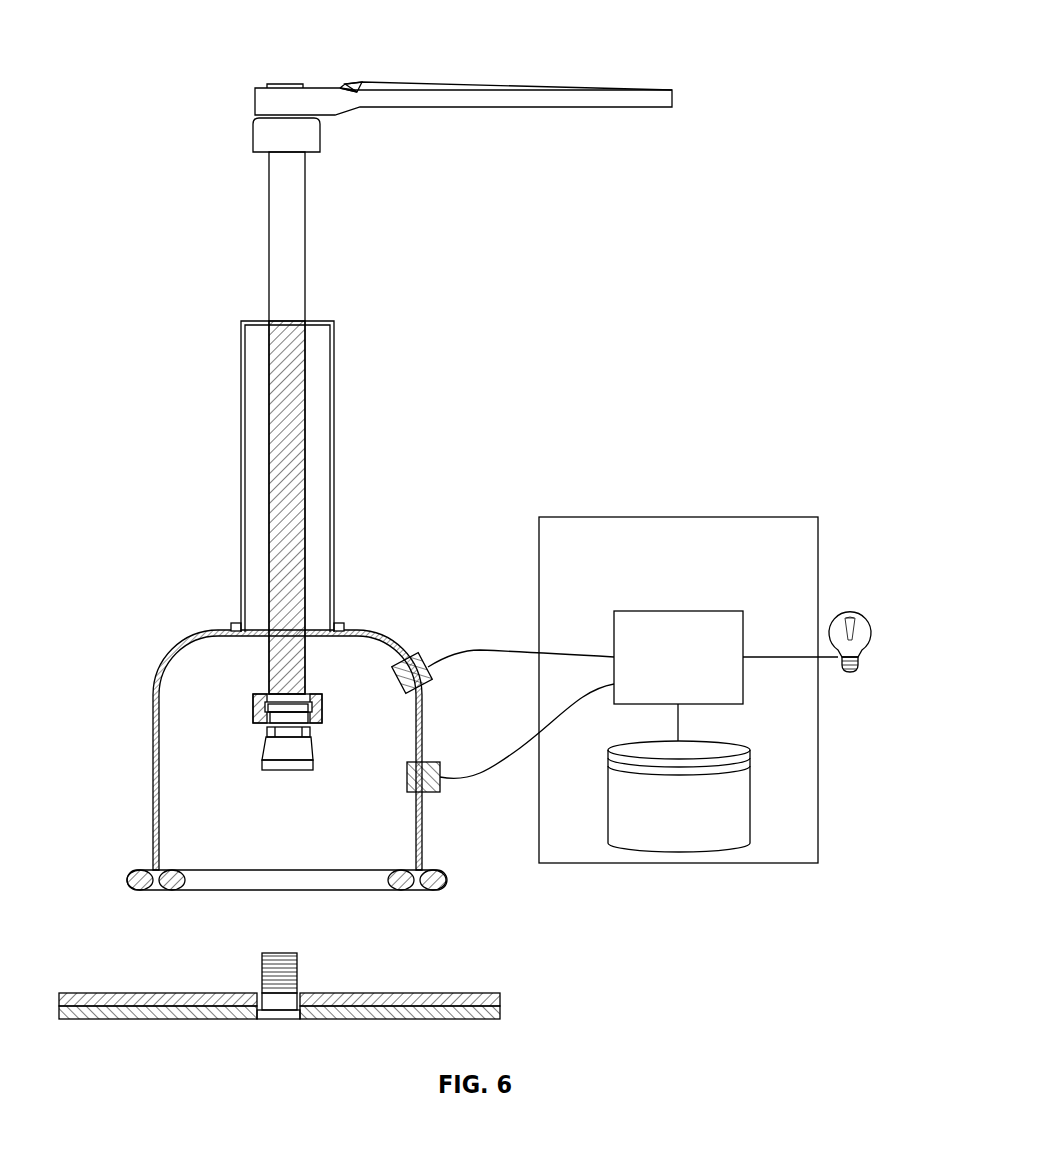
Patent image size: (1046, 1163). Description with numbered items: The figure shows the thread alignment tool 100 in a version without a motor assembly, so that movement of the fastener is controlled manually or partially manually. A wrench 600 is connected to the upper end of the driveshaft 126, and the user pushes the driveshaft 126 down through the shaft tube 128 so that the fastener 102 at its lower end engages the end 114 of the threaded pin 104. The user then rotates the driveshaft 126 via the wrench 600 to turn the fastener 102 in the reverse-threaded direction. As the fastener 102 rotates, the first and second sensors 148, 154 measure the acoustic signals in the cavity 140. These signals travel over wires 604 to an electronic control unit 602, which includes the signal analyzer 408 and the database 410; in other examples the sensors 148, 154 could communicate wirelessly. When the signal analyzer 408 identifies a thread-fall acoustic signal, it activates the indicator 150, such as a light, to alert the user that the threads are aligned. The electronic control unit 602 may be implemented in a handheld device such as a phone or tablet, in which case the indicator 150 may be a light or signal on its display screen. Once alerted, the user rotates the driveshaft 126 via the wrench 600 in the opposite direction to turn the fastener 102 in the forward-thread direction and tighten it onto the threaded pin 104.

The thread alignment tool 100 is at (640, 207).
The wrench 600 is at (515, 95).
The driveshaft 126 is at (305, 241).
The shaft tube 128 is at (334, 374).
The fastener 102 is at (305, 770).
The second sensor 154 is at (428, 685).
The first sensor 148 is at (437, 793).
The wires 604 is at (475, 650).
The cavity 140 is at (394, 866).
The threaded pin 104 is at (300, 985).
The end of threaded pin 114 is at (280, 953).
The electronic control unit 602 is at (600, 515).
The signal analyzer 408 is at (678, 611).
The database 410 is at (644, 740).
The indicator 150 is at (855, 605).